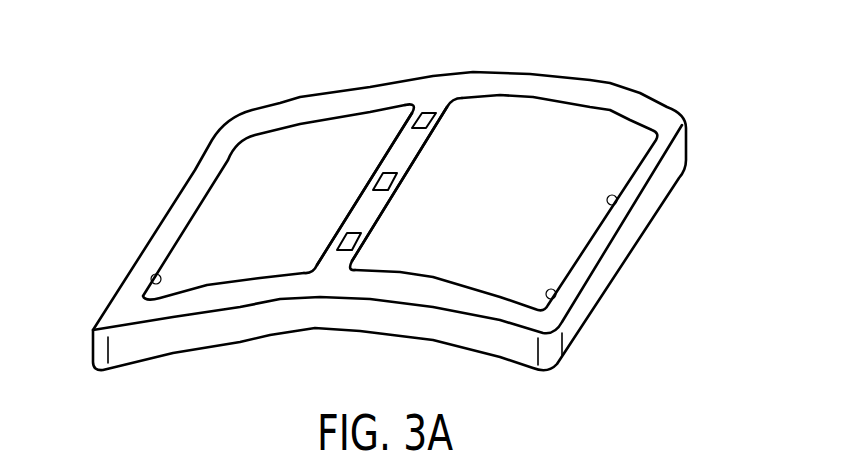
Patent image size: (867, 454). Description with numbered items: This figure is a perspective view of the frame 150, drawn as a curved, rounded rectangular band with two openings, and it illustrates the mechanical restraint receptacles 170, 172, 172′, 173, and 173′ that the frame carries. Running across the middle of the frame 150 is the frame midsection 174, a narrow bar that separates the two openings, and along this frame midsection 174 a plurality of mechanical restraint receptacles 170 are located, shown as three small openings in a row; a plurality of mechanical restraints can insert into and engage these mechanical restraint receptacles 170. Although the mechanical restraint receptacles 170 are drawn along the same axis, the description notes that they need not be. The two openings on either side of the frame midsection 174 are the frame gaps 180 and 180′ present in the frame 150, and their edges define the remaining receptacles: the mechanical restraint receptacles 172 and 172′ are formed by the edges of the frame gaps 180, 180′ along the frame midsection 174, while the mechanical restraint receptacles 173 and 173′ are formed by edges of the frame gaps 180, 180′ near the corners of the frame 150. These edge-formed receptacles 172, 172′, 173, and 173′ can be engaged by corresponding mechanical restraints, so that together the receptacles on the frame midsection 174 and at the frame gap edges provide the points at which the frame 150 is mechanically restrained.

The frame 150 is at (613, 268).
The mechanical restraint receptacles 170 is at (426, 121).
The mechanical restraint receptacle 172 is at (400, 177).
The mechanical restraint receptacle 172′ is at (352, 215).
The mechanical restraint receptacle 173 is at (617, 198).
The mechanical restraint receptacle 173′ is at (150, 279).
The frame midsection 174 is at (407, 147).
The frame gap 180 is at (627, 170).
The frame gap 180′ is at (376, 170).